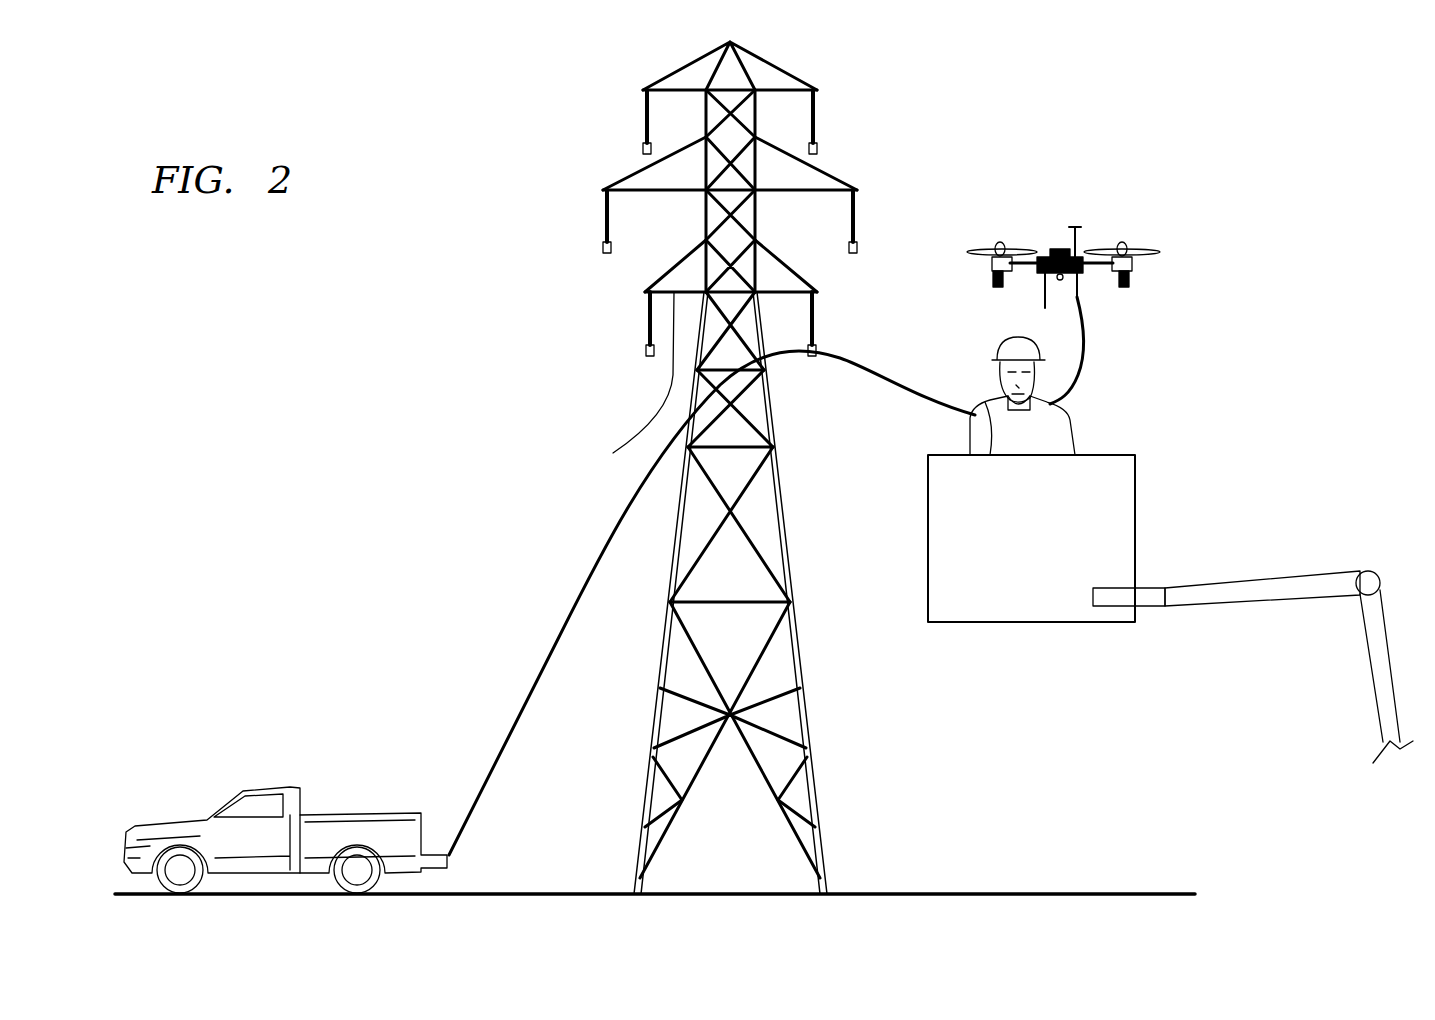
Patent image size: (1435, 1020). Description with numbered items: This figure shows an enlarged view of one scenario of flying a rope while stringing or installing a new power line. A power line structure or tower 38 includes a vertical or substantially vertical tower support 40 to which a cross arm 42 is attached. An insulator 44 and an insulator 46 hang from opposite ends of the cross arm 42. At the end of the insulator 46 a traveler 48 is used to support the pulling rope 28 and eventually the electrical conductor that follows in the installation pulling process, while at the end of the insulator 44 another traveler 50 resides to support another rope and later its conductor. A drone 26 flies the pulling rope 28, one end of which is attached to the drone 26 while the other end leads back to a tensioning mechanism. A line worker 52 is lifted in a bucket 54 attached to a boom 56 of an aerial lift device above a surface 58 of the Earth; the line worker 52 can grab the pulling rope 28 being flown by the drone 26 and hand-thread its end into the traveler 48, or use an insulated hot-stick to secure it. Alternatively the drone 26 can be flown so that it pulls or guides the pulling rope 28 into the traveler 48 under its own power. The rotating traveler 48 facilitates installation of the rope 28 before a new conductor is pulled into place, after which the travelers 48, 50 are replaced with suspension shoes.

The drone 26 is at (1132, 265).
The pulling rope 28 is at (572, 607).
The power line structure or tower 38 is at (786, 68).
The vertical tower support 40 is at (787, 530).
The cross arm 42 is at (627, 390).
The insulator 44 is at (645, 322).
The insulator 46 is at (818, 325).
The traveler 48 is at (814, 358).
The traveler 50 is at (645, 352).
The line worker 52 is at (1008, 338).
The bucket 54 is at (1070, 625).
The boom 56 is at (1235, 583).
The surface 58 is at (1033, 893).